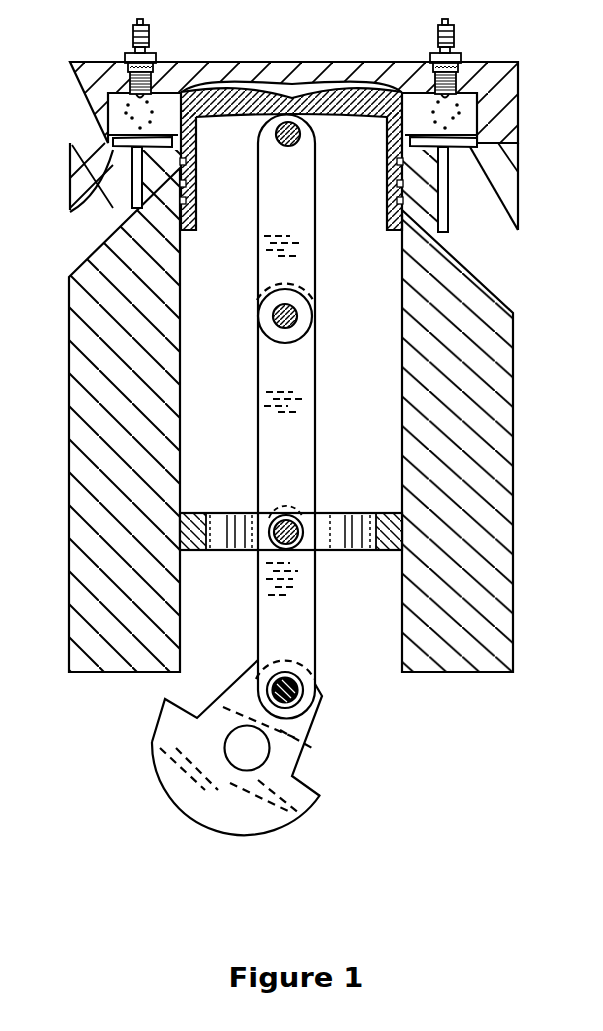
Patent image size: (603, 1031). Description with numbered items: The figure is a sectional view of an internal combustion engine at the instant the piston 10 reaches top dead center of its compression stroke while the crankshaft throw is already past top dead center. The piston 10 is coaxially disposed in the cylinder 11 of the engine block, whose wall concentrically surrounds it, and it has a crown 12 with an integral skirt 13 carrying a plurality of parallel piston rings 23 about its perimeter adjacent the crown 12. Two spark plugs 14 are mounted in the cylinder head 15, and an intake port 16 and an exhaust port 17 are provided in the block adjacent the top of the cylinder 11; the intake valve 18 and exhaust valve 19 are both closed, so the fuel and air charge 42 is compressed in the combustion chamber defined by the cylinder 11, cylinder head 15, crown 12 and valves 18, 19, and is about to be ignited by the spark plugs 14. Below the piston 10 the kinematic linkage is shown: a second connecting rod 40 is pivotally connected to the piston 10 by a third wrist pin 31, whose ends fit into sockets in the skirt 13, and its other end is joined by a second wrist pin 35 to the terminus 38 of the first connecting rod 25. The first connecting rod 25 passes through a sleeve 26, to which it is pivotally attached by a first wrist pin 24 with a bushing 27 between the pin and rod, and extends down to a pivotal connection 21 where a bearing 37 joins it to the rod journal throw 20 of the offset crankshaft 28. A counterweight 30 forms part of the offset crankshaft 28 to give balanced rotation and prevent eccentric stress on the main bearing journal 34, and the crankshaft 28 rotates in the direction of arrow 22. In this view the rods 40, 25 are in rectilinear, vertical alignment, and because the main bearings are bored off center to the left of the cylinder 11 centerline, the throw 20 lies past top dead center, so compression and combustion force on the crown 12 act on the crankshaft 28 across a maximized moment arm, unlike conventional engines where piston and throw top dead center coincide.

The piston 10 is at (372, 126).
The cylinder 11 is at (398, 258).
The piston crown 12 is at (357, 96).
The piston skirt 13 is at (387, 186).
The spark plugs 14 is at (130, 32).
The cylinder head 15 is at (509, 64).
The intake port 16 is at (488, 241).
The exhaust port 17 is at (94, 220).
The intake valve 18 is at (459, 192).
The exhaust valve 19 is at (127, 172).
The crankshaft rod journal throw 20 is at (308, 742).
The pivotal connection 21 is at (300, 680).
The arrow 22 is at (208, 748).
The piston rings 23 is at (403, 200).
The first wrist pin 24 is at (306, 520).
The first connecting rod 25 is at (293, 372).
The sleeve 26 is at (353, 530).
The bushing 27 is at (268, 521).
The offset crankshaft 28 is at (241, 753).
The counterweight 30 is at (275, 841).
The third wrist pin 31 is at (279, 143).
The main bearing journal 34 is at (275, 755).
The second wrist pin 35 is at (276, 327).
The bearing 37 is at (268, 683).
The terminus 38 is at (270, 290).
The second connecting rod 40 is at (287, 210).
The fuel and air charge 42 is at (127, 115).